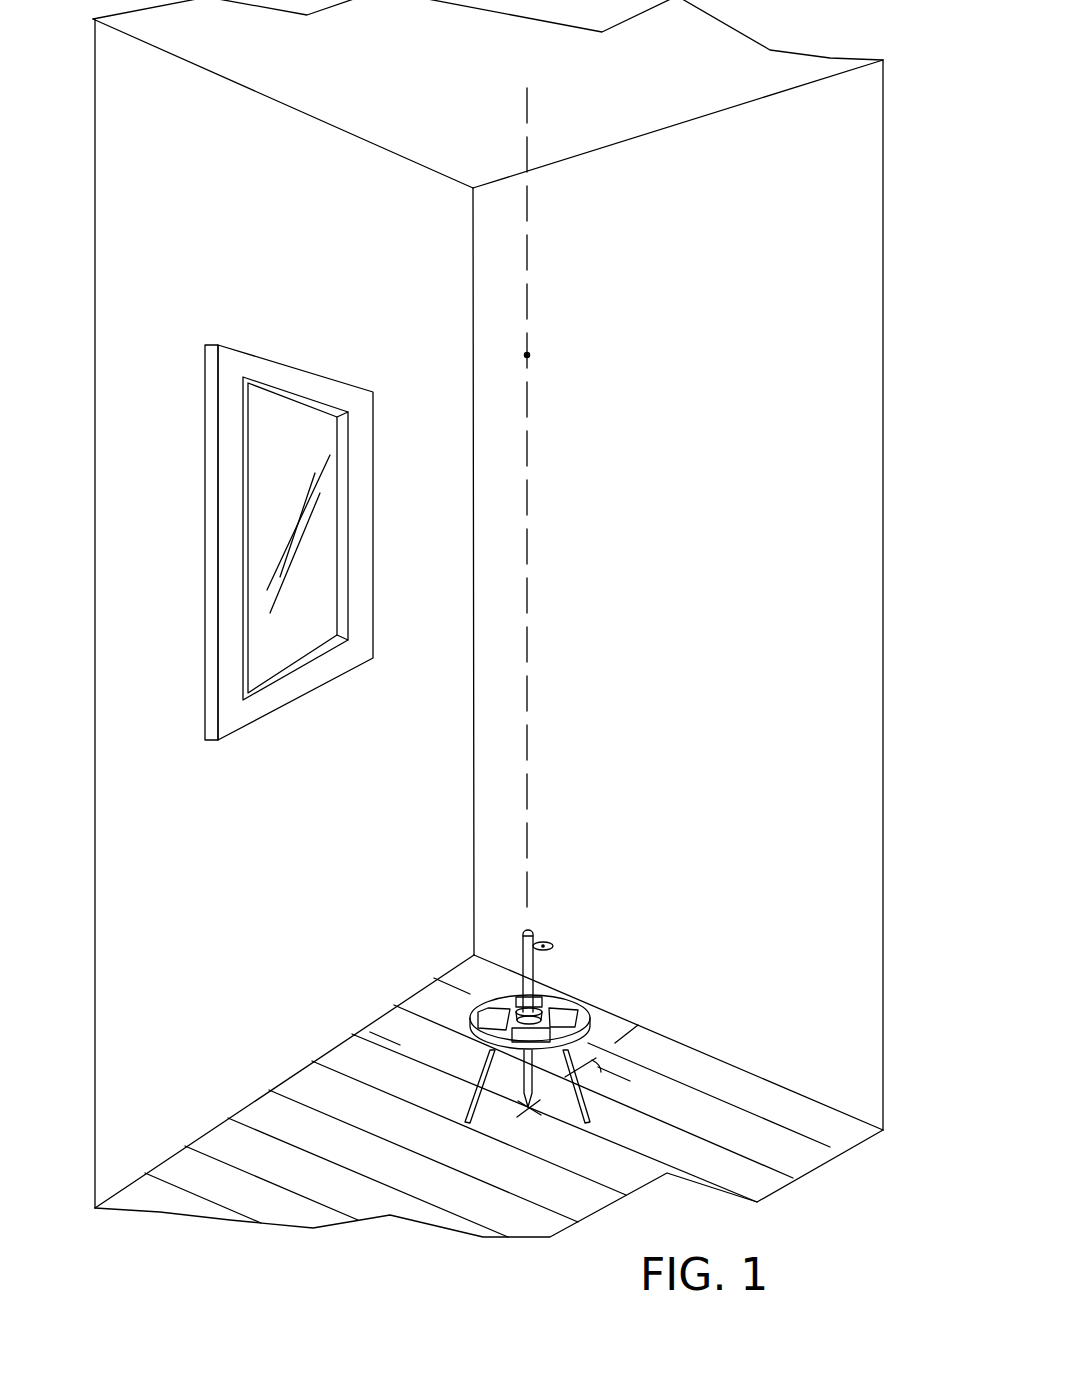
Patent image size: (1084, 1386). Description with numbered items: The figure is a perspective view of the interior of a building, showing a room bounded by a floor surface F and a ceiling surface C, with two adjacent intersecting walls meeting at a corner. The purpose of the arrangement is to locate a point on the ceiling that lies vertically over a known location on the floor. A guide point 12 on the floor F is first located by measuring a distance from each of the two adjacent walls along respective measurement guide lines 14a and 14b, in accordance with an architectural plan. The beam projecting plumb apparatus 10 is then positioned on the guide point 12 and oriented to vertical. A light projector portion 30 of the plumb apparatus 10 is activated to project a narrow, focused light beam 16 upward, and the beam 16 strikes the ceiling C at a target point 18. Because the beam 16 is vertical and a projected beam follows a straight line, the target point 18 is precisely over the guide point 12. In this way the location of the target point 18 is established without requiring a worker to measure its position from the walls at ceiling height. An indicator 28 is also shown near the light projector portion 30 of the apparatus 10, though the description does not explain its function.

The beam projecting plumb apparatus 10 is at (628, 1049).
The guide point 12 is at (532, 1116).
The measurement guide line 14a is at (613, 1077).
The measurement guide line 14b is at (386, 1039).
The light beam 16 is at (530, 357).
The target point 18 is at (527, 87).
The level indicator 28 is at (553, 943).
The light projector portion 30 is at (535, 931).
The ceiling surface C is at (656, 95).
The floor surface F is at (367, 1164).